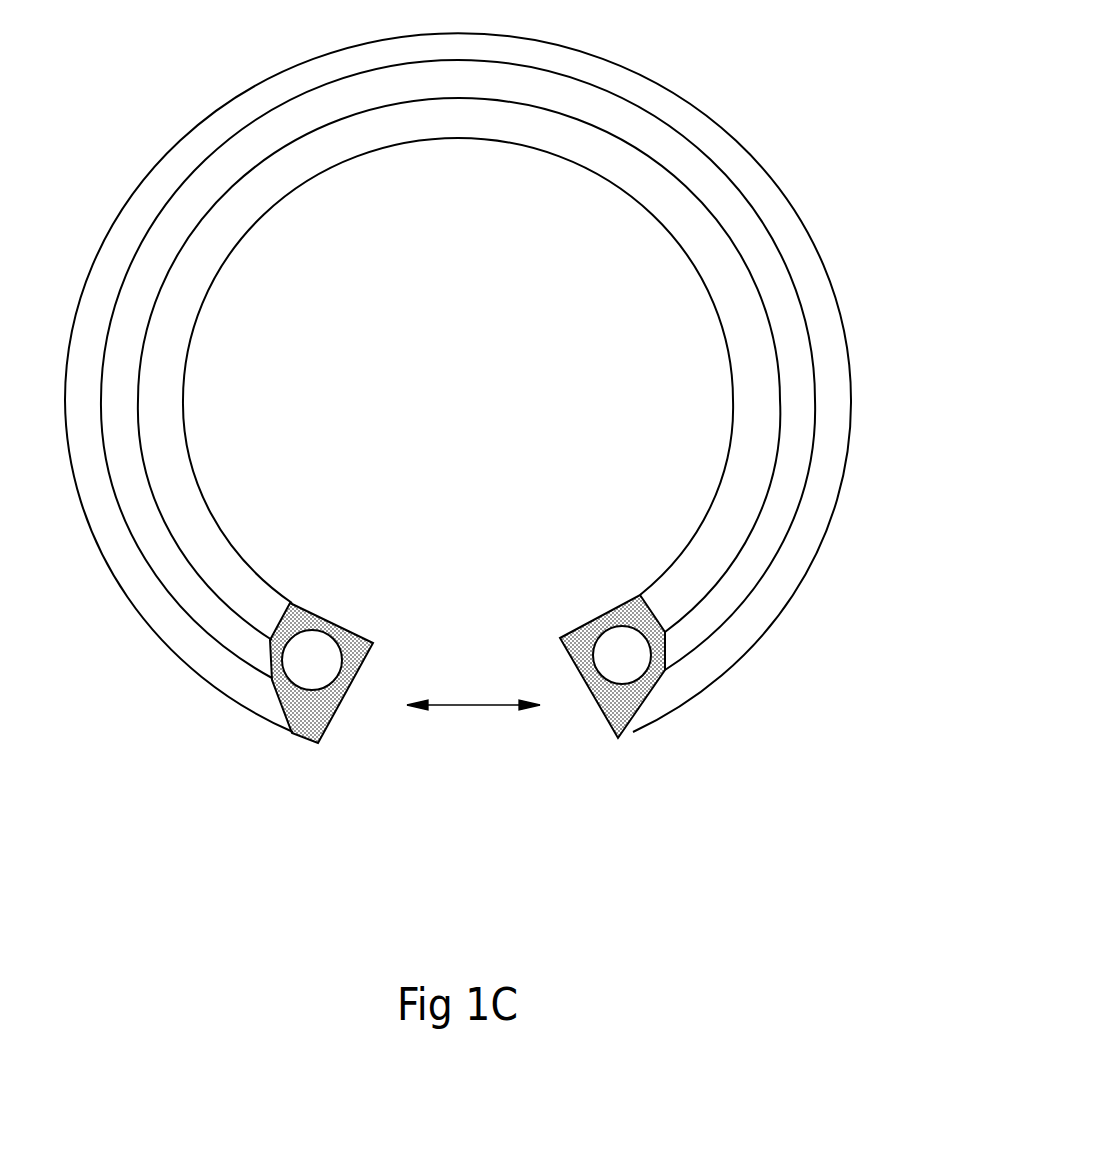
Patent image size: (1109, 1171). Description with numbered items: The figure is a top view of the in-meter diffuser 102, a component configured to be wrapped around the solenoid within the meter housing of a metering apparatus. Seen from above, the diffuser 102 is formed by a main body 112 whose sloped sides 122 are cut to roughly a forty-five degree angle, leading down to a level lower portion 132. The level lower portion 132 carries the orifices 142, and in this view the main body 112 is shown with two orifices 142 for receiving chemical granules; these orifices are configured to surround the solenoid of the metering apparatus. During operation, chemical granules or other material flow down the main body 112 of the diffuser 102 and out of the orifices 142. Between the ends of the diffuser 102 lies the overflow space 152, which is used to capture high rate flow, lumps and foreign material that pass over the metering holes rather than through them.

The in-meter diffuser 102 is at (510, 382).
The main body 112 is at (833, 241).
The sloped sides 122 is at (793, 425).
The level lower portion 132 is at (542, 628).
The orifices 142 is at (466, 597).
The overflow space 152 is at (473, 706).